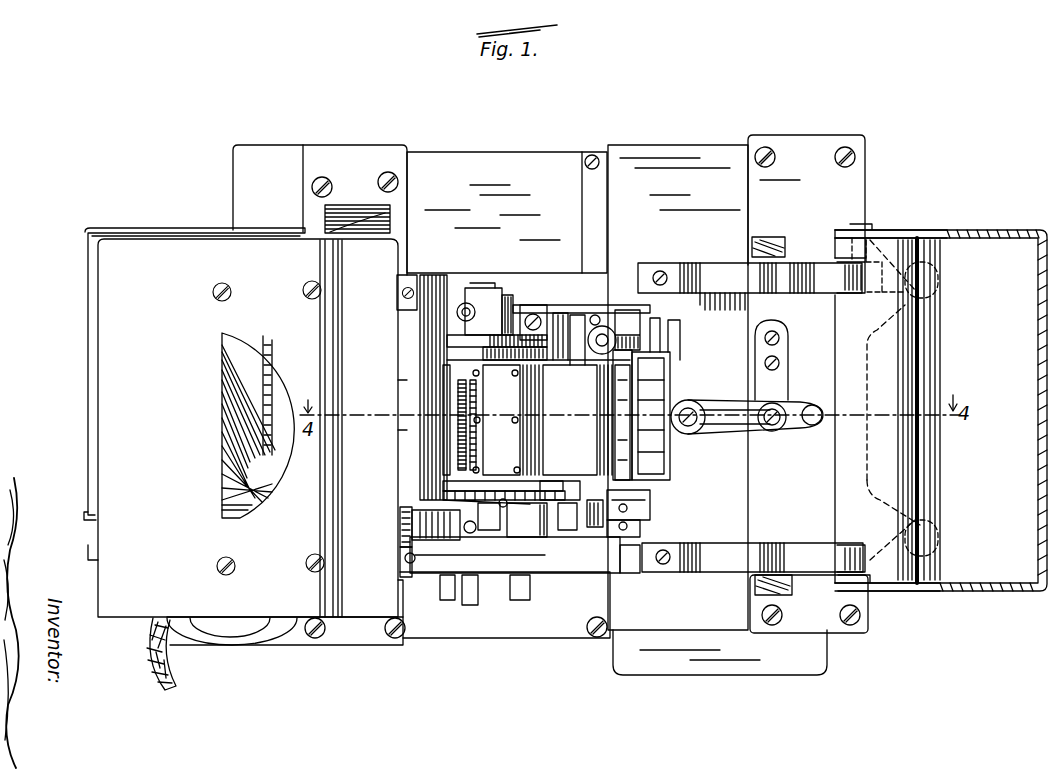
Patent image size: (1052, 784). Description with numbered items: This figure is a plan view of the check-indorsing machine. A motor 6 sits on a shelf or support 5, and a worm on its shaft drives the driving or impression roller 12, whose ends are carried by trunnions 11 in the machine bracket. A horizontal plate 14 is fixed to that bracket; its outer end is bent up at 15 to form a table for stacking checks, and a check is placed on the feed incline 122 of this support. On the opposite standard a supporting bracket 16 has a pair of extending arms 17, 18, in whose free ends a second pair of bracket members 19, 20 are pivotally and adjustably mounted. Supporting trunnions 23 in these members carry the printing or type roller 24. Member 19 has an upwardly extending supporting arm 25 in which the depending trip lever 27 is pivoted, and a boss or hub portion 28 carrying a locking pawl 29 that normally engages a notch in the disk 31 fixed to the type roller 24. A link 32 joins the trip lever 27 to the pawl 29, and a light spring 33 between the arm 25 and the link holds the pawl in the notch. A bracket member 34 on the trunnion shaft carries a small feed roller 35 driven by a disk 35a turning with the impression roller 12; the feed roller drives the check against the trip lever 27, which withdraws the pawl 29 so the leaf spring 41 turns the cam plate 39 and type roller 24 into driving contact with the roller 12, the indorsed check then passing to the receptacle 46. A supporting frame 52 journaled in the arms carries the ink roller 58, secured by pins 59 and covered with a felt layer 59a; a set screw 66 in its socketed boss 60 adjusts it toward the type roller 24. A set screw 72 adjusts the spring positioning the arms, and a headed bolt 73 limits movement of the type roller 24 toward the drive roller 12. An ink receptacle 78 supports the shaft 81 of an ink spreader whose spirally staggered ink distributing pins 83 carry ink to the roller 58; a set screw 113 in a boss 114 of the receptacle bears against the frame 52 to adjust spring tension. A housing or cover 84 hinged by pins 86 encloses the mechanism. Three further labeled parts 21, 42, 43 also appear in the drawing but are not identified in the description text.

The shelf or support 5 is at (365, 640).
The motor 6 is at (235, 345).
The trunnions 11 is at (398, 262).
The driving or impression roller 12 is at (400, 393).
The horizontal plate 14 is at (241, 422).
The upwardly bent end 15 is at (96, 558).
The supporting bracket 16 is at (809, 476).
The extending arm 17 is at (715, 575).
The extending arm 18 is at (708, 275).
The bracket member 19 is at (570, 560).
The bracket member 20 is at (548, 305).
The screw 21 is at (660, 272).
The supporting trunnions 23 is at (478, 288).
The printing or type roller 24 is at (536, 417).
The supporting arm 25 is at (520, 595).
The trip lever 27 is at (455, 585).
The boss or hub portion 28 is at (540, 520).
The locking pawl 29 is at (548, 482).
The disk 31 is at (492, 483).
The link 32 is at (445, 486).
The spring 33 is at (580, 522).
The bracket member 34 is at (470, 600).
The feed roller 35 is at (420, 625).
The disk 35a is at (405, 522).
The cam plate 39 is at (445, 350).
The leaf spring 41 is at (507, 295).
The screw 42 is at (533, 314).
The plate 43 is at (480, 345).
The receptacle 46 is at (717, 410).
The supporting frame 52 is at (660, 385).
The ink roller 58 is at (591, 392).
The pins 59 is at (612, 545).
The felt layer 59a is at (591, 422).
The socketed boss 60 is at (698, 428).
The set screw 66 is at (686, 428).
The set screw 72 is at (772, 432).
The headed bolt 73 is at (822, 413).
The ink receptacle 78 is at (650, 500).
The shaft of ink spreader 81 is at (640, 362).
The ink distributing pins 83 is at (672, 460).
The housing or cover 84 is at (952, 230).
The pins 86 is at (856, 230).
The set screw 113 is at (628, 508).
The boss 114 is at (628, 524).
The feed incline 122 is at (378, 433).